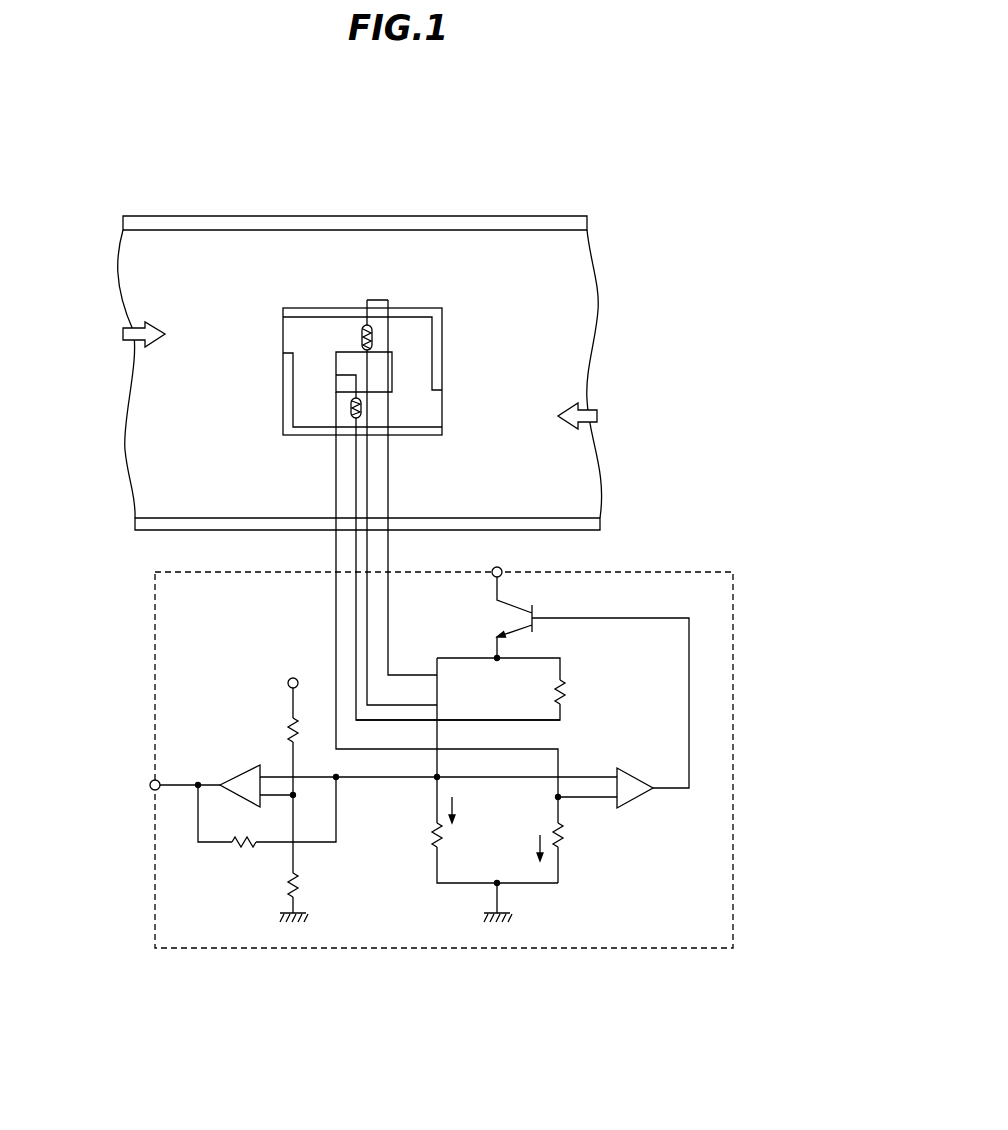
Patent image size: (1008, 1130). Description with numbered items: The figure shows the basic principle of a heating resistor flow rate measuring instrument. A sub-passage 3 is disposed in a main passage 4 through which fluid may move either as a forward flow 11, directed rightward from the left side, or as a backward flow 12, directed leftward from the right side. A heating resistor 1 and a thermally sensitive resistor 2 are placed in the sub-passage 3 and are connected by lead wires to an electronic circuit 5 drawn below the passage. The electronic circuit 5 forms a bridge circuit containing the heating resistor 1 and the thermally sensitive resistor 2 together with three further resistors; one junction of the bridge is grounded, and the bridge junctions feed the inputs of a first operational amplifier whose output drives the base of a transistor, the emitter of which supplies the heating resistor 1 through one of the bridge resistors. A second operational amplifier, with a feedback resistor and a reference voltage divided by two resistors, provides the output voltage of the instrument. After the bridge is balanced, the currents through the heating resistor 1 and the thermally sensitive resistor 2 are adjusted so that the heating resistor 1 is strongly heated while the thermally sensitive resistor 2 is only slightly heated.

The heating resistor 1 is at (365, 327).
The thermally sensitive resistor 2 is at (352, 413).
The sub-passage 3 is at (305, 328).
The main passage 4 is at (528, 216).
The electronic circuit 5 is at (700, 572).
The forward flow 11 is at (123, 332).
The backward flow 12 is at (598, 415).